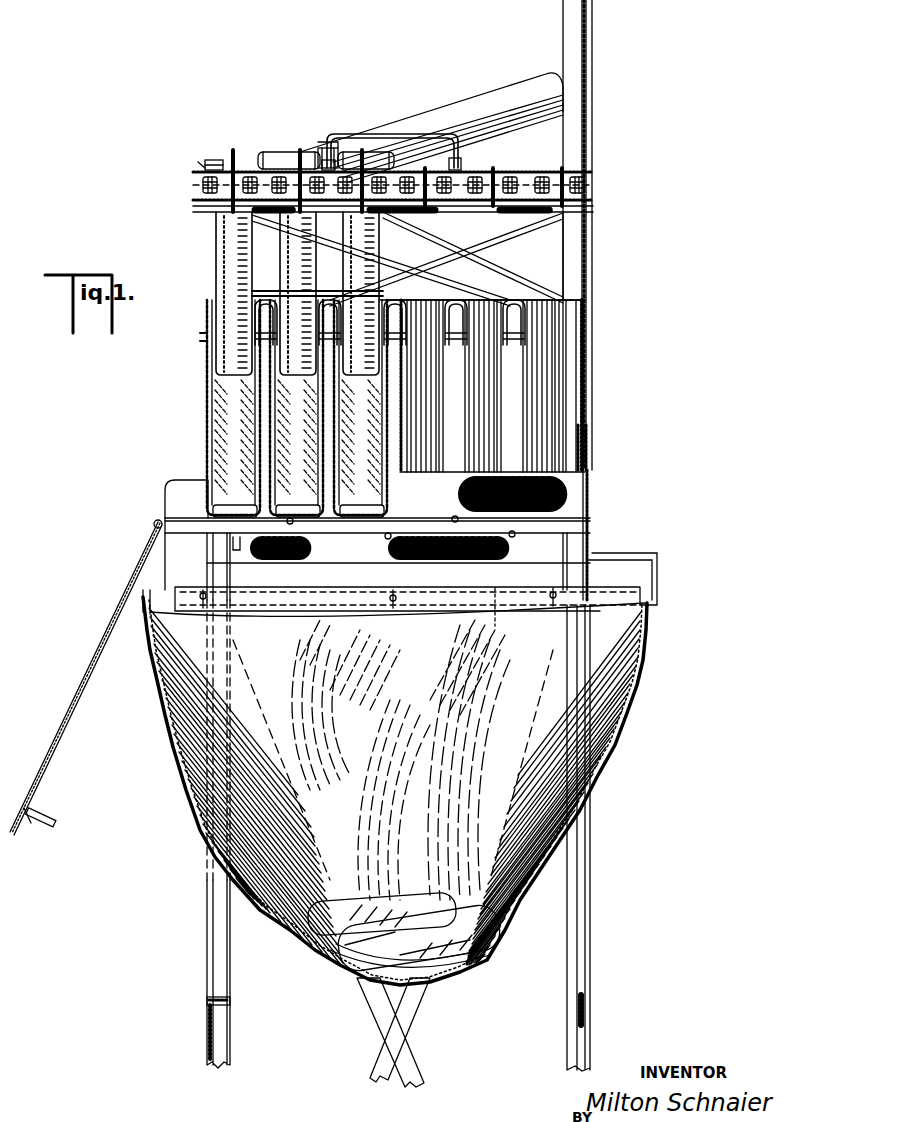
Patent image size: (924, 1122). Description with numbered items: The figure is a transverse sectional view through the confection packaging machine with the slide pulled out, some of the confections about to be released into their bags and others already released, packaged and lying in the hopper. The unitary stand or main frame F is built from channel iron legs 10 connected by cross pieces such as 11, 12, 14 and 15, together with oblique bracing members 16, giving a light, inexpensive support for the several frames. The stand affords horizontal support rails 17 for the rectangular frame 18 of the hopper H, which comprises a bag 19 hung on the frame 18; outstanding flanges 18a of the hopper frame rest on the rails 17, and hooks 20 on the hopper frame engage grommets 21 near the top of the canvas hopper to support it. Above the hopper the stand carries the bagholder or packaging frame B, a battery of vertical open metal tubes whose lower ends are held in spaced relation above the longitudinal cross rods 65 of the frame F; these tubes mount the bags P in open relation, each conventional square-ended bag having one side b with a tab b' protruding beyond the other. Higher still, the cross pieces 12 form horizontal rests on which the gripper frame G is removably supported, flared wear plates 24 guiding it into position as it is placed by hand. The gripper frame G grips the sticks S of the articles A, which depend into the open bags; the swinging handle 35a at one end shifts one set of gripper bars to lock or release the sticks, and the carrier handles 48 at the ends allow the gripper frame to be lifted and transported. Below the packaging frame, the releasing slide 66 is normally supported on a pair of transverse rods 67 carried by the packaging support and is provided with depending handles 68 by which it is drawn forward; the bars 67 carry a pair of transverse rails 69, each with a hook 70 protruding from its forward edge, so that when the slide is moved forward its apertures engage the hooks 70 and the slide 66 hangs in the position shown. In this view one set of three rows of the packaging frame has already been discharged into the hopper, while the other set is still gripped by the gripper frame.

The cross piece 15 is at (595, 18).
The flared wear plates 24 is at (480, 84).
The carrier handles 48 is at (382, 133).
The swinging handle 35a is at (322, 160).
The gripper frame G is at (518, 172).
The sticks S is at (240, 170).
The articles A is at (392, 237).
The cross piece 12 is at (455, 207).
The tab b' is at (332, 290).
The bag side b is at (303, 407).
The bagholder frame B is at (634, 388).
The cross piece 14 is at (594, 441).
The packages or bags P is at (462, 966).
The transverse rods 67 is at (456, 518).
The transverse rails 69 is at (362, 526).
The longitudinal cross rods 65 is at (511, 536).
The hook 70 is at (156, 523).
The outstanding flanges 18a is at (152, 590).
The rectangular frame 18 is at (331, 591).
The hooks 20 is at (395, 594).
The grommets 21 is at (398, 601).
The horizontal support rails 17 is at (495, 606).
The hopper H is at (640, 720).
The bag 19 is at (183, 797).
The releasing slide 66 is at (73, 712).
The depending handles 68 is at (46, 828).
The channel iron legs 10 is at (591, 1000).
The cross piece 11 is at (214, 997).
The main frame F is at (640, 930).
The oblique bracing members 16 is at (398, 1040).